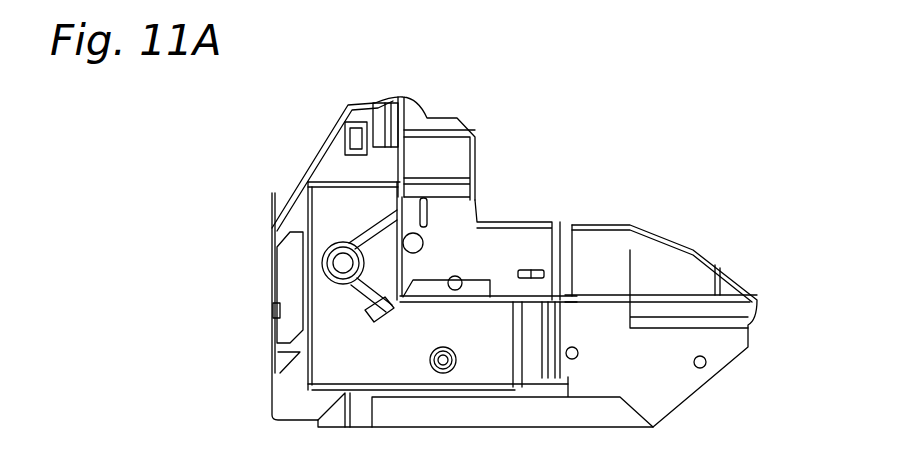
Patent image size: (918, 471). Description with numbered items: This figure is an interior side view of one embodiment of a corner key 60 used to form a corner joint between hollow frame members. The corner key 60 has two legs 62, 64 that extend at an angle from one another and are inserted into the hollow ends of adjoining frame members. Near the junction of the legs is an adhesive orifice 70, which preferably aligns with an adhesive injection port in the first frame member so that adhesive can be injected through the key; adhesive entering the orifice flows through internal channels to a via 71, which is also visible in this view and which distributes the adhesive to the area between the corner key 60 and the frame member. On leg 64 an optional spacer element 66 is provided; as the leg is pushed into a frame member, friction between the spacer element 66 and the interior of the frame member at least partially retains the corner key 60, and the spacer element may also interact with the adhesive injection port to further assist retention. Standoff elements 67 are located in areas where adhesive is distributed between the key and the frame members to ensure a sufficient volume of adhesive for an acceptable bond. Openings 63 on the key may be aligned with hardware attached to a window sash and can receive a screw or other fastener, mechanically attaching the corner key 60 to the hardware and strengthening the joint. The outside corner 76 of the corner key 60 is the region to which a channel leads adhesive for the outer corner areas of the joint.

The corner key 60 is at (688, 150).
The leg 62 is at (738, 280).
The openings 63 is at (575, 359).
The leg 64 is at (463, 125).
The spacer element 66 is at (345, 130).
The standoff elements 67 is at (428, 215).
The adhesive orifice 70 is at (337, 254).
The via 71 is at (406, 236).
The outside corner 76 is at (272, 407).